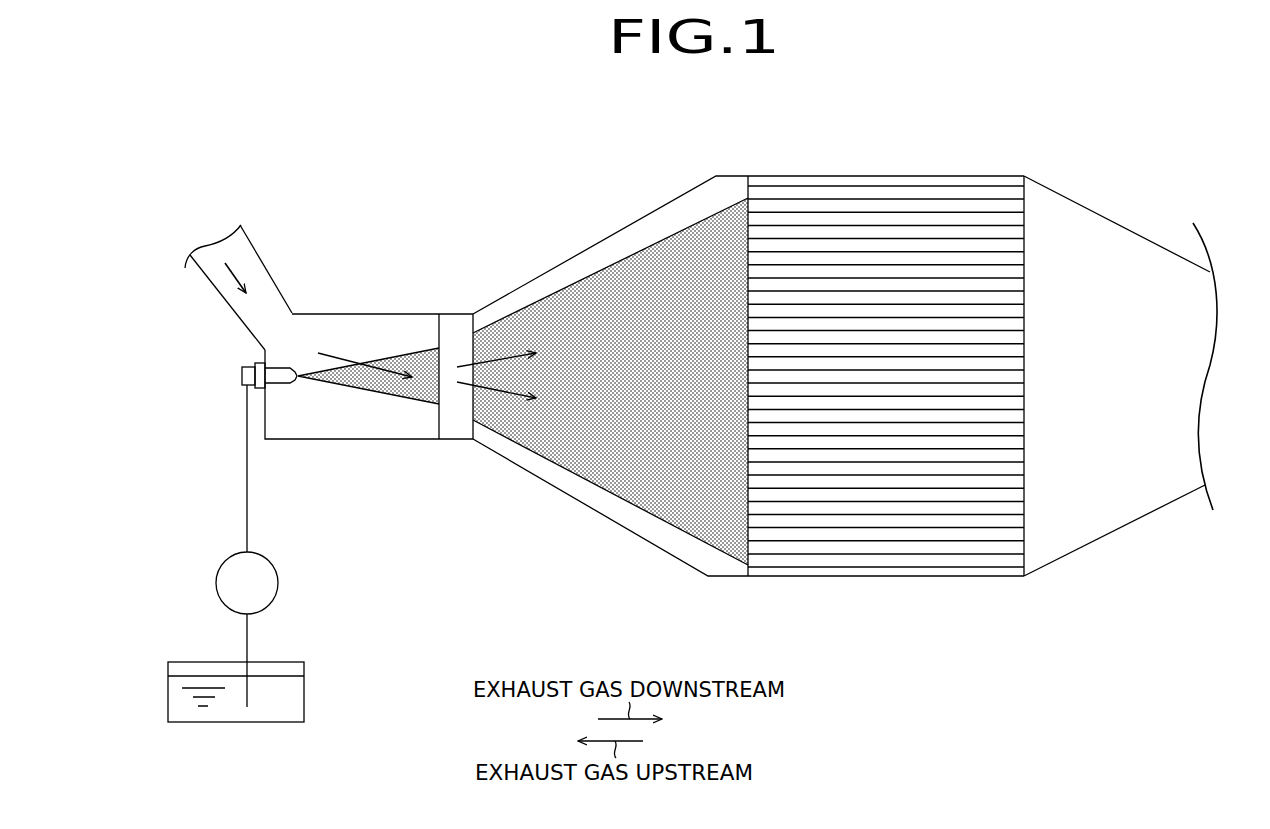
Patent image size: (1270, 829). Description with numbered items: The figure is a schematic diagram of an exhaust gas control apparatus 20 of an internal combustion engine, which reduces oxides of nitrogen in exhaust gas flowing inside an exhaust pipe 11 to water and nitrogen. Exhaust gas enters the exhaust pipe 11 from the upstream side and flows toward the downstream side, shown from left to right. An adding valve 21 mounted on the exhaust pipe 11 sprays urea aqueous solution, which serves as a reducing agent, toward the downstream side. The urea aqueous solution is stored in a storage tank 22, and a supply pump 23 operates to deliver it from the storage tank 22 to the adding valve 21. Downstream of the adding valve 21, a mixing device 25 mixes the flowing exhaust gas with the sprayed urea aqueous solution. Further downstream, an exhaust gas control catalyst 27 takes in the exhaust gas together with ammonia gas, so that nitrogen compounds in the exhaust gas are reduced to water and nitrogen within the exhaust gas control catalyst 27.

The exhaust pipe 11 is at (370, 314).
The exhaust gas control apparatus 20 is at (303, 520).
The adding valve 21 is at (283, 366).
The storage tank 22 is at (305, 693).
The supply pump 23 is at (279, 585).
The mixing device 25 is at (456, 318).
The exhaust gas control catalyst 27 is at (888, 190).